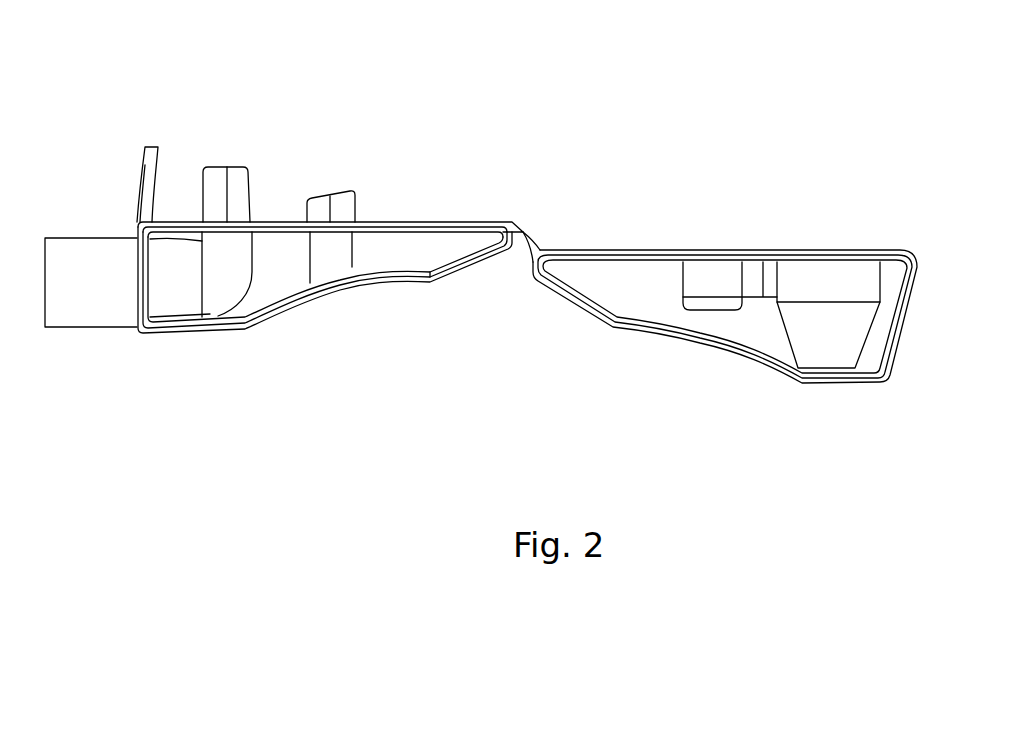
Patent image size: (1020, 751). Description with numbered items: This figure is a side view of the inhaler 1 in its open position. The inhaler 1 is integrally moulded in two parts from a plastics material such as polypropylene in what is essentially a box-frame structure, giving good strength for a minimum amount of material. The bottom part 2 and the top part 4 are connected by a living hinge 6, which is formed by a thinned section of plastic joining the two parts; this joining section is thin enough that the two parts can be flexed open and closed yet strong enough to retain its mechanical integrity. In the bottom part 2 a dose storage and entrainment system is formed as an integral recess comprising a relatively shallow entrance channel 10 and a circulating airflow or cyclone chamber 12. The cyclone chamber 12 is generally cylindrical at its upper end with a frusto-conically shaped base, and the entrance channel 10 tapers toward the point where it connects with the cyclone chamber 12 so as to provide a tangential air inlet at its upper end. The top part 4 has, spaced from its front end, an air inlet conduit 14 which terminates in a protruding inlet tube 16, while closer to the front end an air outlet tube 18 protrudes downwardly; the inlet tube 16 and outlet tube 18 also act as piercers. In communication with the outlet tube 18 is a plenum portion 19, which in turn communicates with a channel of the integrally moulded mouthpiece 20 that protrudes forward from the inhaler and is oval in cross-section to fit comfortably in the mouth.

The inhaler 1 is at (493, 146).
The bottom part 2 is at (632, 302).
The top part 4 is at (378, 253).
The living hinge 6 is at (523, 232).
The entrance channel 10 is at (716, 291).
The cyclone chamber 12 is at (844, 294).
The air inlet conduit 14 is at (330, 232).
The inlet tube 16 is at (347, 212).
The air outlet tube 18 is at (238, 187).
The plenum portion 19 is at (186, 297).
The mouthpiece 20 is at (90, 299).